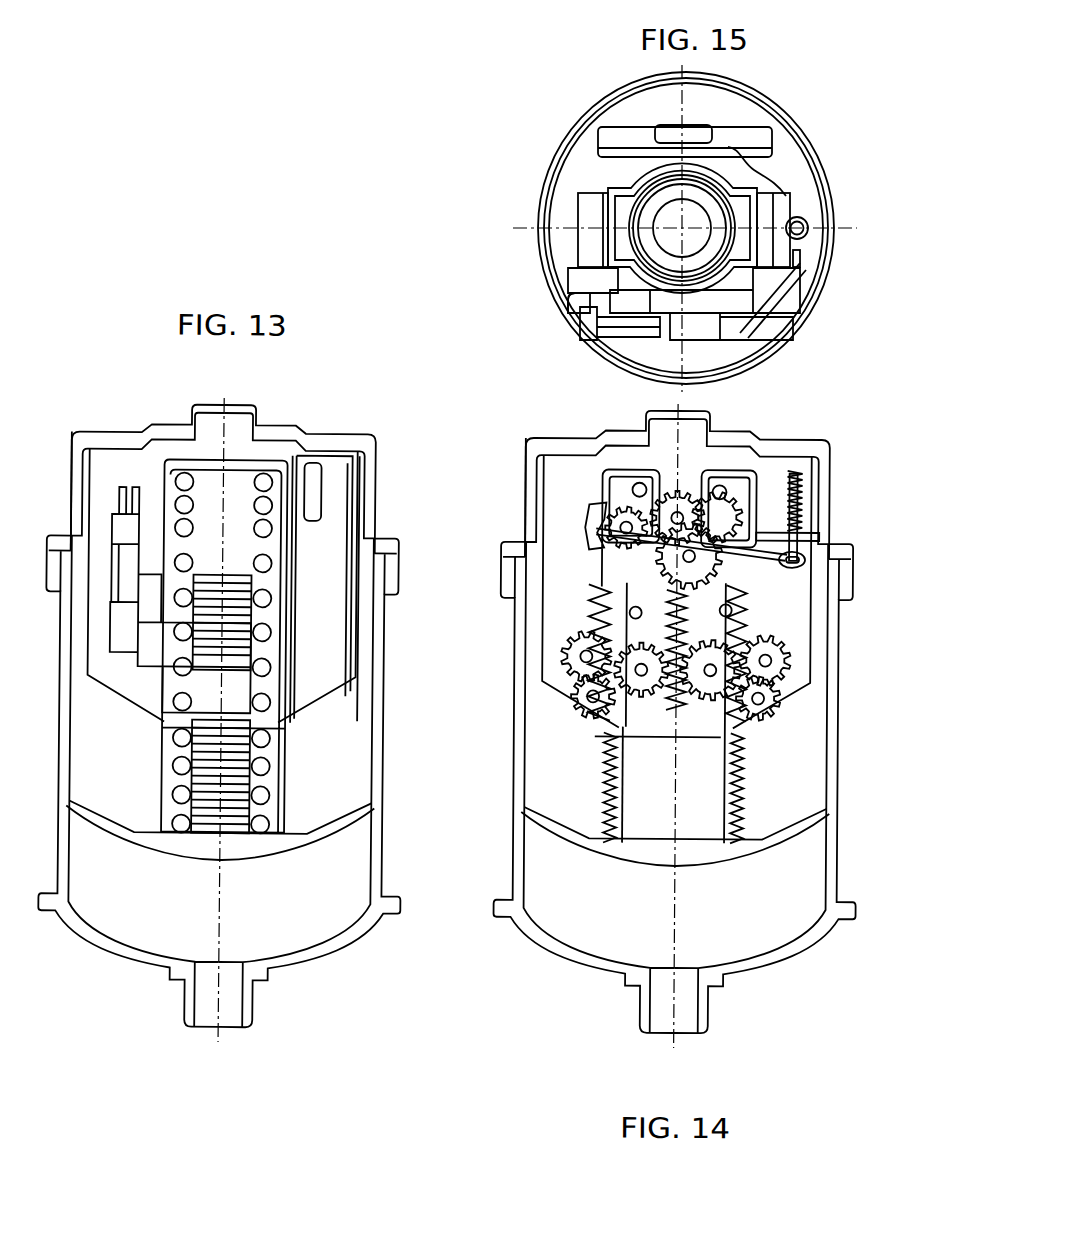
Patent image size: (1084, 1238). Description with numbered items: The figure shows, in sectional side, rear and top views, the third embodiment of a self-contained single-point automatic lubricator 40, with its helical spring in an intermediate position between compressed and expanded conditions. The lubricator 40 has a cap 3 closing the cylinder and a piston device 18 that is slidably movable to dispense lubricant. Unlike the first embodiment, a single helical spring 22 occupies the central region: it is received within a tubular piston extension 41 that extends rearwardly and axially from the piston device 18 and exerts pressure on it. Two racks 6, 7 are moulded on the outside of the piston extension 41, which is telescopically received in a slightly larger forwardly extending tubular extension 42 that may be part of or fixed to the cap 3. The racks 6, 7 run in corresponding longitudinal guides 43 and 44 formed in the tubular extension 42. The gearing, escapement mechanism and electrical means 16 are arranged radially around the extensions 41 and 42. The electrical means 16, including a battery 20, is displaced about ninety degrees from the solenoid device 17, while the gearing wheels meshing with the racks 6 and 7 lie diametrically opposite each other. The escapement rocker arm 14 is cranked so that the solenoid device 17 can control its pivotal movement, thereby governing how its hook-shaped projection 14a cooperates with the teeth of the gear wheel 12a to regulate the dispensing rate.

In FIG. 13, the cap 3 is at (376, 506).
In FIG. 14, the cap 3 is at (528, 492).
In FIG. 14, the rack member 6 is at (603, 781).
In FIG. 15, the rack member 6 is at (619, 212).
In FIG. 14, the rack member 7 is at (750, 777).
In FIG. 15, the rack member 7 is at (760, 195).
In FIG. 14, the gear wheel 12a is at (622, 512).
In FIG. 15, the gear wheel 12a is at (575, 295).
In FIG. 14, the escapement rocker arm 14 is at (774, 565).
In FIG. 15, the escapement rocker arm 14 is at (755, 325).
In FIG. 14, the hook-shaped projection 14a is at (600, 552).
In FIG. 13, the electrical means 16 is at (338, 620).
In FIG. 15, the electrical means 16 is at (735, 122).
In FIG. 14, the solenoid device 17 is at (806, 501).
In FIG. 15, the solenoid device 17 is at (805, 236).
In FIG. 13, the piston device 18 is at (286, 840).
In FIG. 14, the piston device 18 is at (618, 850).
In FIG. 13, the battery 20 is at (320, 478).
In FIG. 15, the battery 20 is at (655, 130).
In FIG. 13, the helical spring 22 is at (270, 770).
In FIG. 14, the helical spring 22 is at (722, 490).
In FIG. 15, the helical spring 22 is at (632, 182).
In FIG. 13, the lubricator 40 is at (344, 420).
In FIG. 14, the lubricator 40 is at (523, 432).
In FIG. 15, the lubricator 40 is at (533, 113).
In FIG. 13, the tubular piston extension 41 is at (168, 758).
In FIG. 14, the tubular piston extension 41 is at (628, 768).
In FIG. 15, the tubular piston extension 41 is at (650, 197).
In FIG. 13, the tubular extension 42 is at (290, 544).
In FIG. 15, the tubular extension 42 is at (720, 170).
In FIG. 15, the guide 43 is at (607, 238).
In FIG. 15, the guide 44 is at (792, 202).